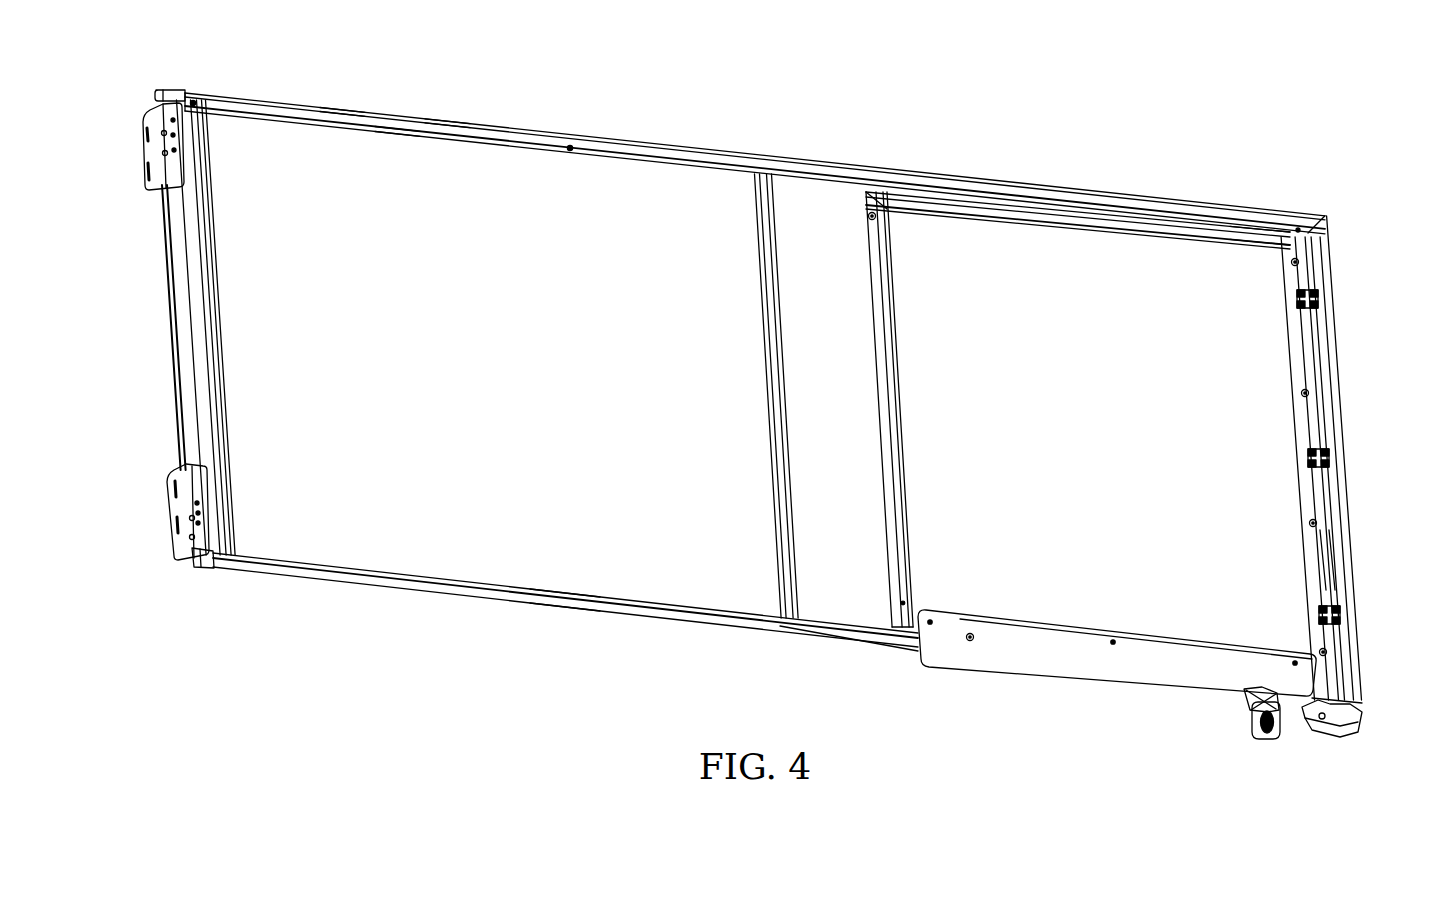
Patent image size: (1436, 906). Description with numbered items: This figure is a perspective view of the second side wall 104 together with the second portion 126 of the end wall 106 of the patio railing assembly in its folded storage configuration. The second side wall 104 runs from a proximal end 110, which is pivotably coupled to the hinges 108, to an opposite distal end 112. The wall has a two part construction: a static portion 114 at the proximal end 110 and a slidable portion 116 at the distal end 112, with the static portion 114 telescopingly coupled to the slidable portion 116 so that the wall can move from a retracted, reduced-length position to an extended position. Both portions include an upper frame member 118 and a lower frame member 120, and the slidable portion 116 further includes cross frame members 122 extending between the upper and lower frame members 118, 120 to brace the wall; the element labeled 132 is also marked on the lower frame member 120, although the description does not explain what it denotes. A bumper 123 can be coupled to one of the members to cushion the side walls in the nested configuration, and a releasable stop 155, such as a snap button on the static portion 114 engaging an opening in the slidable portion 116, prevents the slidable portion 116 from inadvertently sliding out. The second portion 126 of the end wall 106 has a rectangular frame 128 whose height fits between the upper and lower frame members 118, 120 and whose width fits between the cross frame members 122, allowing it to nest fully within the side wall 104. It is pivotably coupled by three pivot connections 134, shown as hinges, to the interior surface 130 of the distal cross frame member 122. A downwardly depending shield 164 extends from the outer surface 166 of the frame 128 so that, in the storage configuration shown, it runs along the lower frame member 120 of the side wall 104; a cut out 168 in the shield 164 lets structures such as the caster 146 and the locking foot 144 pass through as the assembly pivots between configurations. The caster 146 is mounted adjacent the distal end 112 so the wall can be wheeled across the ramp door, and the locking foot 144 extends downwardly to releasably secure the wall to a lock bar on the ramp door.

The second side wall 104 is at (517, 137).
The end wall 106 is at (1033, 410).
The hinges 108 is at (147, 162).
The proximal end 110 is at (212, 562).
The distal end 112 is at (1338, 401).
The static portion 114 is at (178, 91).
The slidable portion 116 is at (447, 123).
The upper frame member 118 is at (342, 111).
The lower frame member 120 is at (410, 592).
The cross frame member 122 is at (203, 270).
The bumper 123 is at (200, 101).
The second portion of end wall 126 is at (1250, 233).
The rectangular frame 128 is at (902, 590).
The interior surface 130 is at (398, 136).
The bottom rail face 132 is at (560, 606).
The pivot connection 134 is at (1318, 300).
The locking foot 144 is at (1347, 716).
The caster 146 is at (1264, 733).
The releasable stop 155 is at (570, 145).
The shield 164 is at (1060, 665).
The outer surface 166 is at (1325, 555).
The cut out 168 is at (1255, 690).